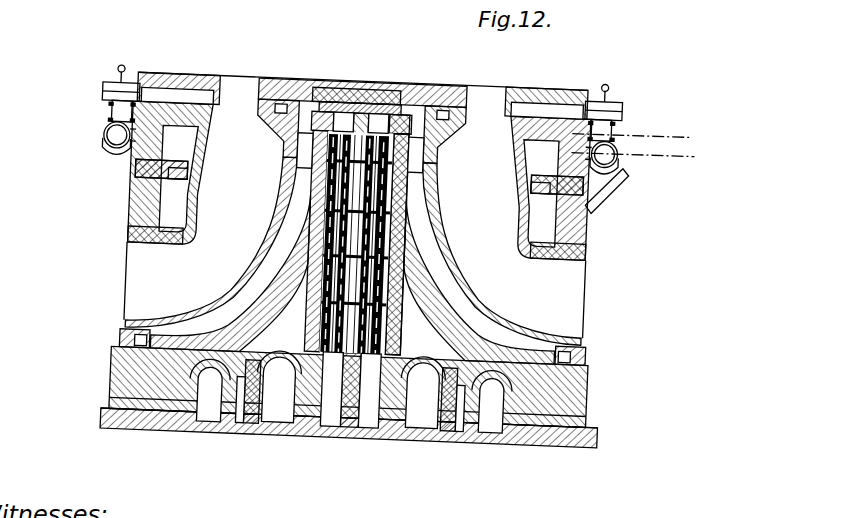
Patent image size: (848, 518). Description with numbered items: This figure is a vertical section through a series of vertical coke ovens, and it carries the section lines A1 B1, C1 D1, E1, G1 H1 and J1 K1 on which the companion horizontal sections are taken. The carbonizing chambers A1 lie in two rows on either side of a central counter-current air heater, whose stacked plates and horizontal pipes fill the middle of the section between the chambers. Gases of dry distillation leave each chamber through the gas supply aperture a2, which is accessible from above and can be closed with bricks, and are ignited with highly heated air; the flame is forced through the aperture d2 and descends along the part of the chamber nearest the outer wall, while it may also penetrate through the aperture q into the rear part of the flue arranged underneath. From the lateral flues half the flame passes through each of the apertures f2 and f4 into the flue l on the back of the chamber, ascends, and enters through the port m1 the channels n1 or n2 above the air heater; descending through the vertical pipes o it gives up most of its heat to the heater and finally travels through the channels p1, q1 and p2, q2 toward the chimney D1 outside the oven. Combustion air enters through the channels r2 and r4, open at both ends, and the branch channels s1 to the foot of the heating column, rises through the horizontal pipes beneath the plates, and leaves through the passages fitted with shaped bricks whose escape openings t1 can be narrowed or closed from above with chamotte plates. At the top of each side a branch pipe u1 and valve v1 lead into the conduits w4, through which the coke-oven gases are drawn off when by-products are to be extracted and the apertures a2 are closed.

The oven chamber A1 is at (681, 114).
The section line letter B1 is at (644, 135).
The section line letter C1 is at (682, 133).
The chimney D1 is at (646, 154).
The section line letter E1 is at (625, 204).
The conduit w4 is at (103, 129).
The valve v1 is at (119, 82).
The branch pipe u1 is at (142, 93).
The aperture d2 is at (170, 166).
The aperture q is at (266, 74).
The gas supply aperture a2 is at (261, 71).
The escape opening t1 is at (296, 72).
The port m1 is at (331, 112).
The channel n1 is at (366, 112).
The channel n2 is at (350, 118).
The vertical pipe o is at (374, 149).
The flue l is at (280, 295).
The section line letter G1 is at (116, 337).
The section line letter H1 is at (588, 334).
The aperture f2 is at (116, 332).
The aperture f4 is at (577, 336).
The section line letter J1 is at (108, 396).
The section line letter K1 is at (585, 396).
The air channel r2 is at (216, 380).
The branch channel s1 is at (247, 420).
The flue gas channel q1 is at (281, 372).
The flue gas channel q2 is at (422, 375).
The air channel r4 is at (494, 382).
The flue gas channel p1 is at (334, 380).
The flue gas channel p2 is at (367, 380).